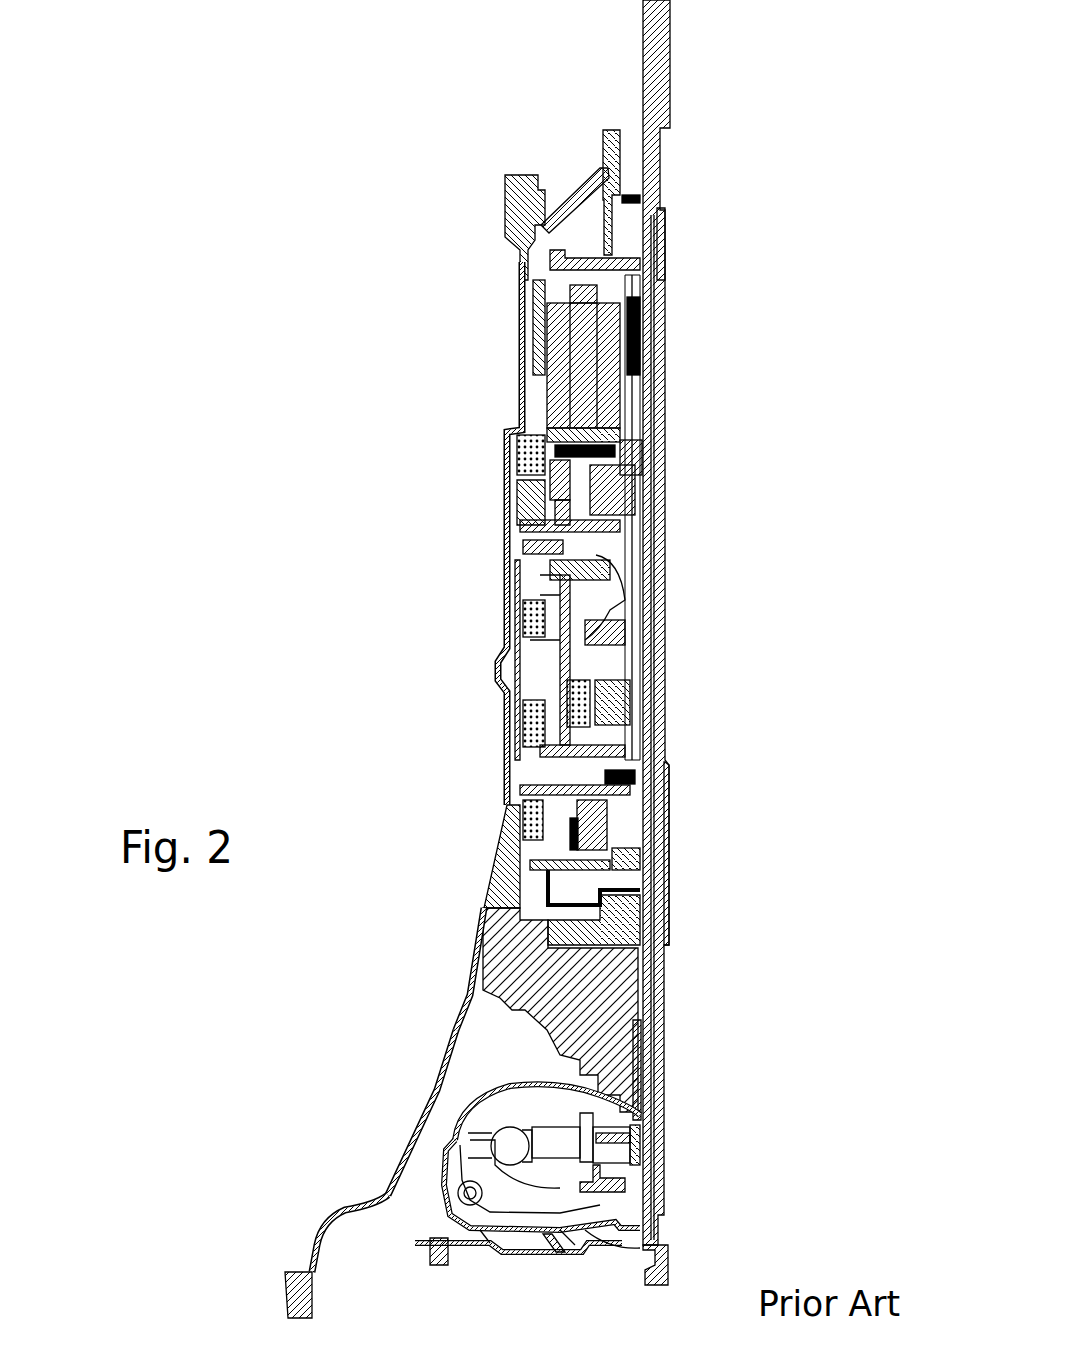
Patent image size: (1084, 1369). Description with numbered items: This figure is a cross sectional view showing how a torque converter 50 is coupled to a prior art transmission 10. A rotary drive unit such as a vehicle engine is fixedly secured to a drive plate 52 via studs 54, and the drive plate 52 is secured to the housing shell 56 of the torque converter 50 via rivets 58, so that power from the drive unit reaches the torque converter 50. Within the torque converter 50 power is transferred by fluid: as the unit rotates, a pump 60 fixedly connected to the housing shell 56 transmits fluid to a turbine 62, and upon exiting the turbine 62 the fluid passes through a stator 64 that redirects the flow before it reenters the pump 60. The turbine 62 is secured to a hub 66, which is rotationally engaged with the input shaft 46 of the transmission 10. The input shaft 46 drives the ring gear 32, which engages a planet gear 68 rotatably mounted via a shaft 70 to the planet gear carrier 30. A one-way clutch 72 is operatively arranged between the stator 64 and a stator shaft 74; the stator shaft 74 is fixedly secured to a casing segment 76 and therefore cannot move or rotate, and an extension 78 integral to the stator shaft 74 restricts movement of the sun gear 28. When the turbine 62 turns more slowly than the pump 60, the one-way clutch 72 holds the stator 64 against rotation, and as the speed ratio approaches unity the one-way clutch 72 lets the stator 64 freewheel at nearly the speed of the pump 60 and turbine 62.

The transmission 10 is at (507, 447).
The sun gear 28 is at (665, 812).
The planet gear carrier 30 is at (658, 748).
The ring gear 32 is at (507, 808).
The input shaft 46 is at (660, 1085).
The torque converter 50 is at (448, 1098).
The drive plate 52 is at (527, 1252).
The studs 54 is at (440, 1266).
The housing shell 56 is at (395, 1200).
The rivets 58 is at (564, 1250).
The pump 60 is at (557, 1140).
The turbine 62 is at (452, 1153).
The stator 64 is at (507, 1108).
The hub 66 is at (660, 1222).
The planet gear 68 is at (660, 877).
The shaft 70 is at (660, 937).
The one-way clutch 72 is at (660, 1177).
The stator shaft 74 is at (660, 1147).
The casing segment 76 is at (480, 930).
The extension 78 is at (660, 852).